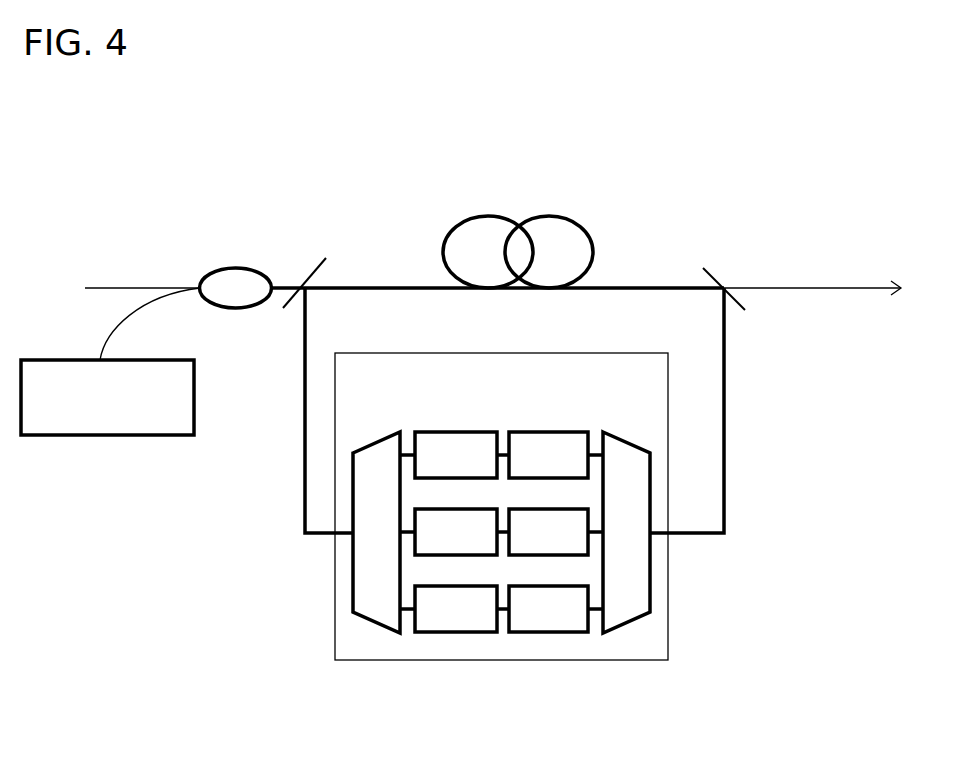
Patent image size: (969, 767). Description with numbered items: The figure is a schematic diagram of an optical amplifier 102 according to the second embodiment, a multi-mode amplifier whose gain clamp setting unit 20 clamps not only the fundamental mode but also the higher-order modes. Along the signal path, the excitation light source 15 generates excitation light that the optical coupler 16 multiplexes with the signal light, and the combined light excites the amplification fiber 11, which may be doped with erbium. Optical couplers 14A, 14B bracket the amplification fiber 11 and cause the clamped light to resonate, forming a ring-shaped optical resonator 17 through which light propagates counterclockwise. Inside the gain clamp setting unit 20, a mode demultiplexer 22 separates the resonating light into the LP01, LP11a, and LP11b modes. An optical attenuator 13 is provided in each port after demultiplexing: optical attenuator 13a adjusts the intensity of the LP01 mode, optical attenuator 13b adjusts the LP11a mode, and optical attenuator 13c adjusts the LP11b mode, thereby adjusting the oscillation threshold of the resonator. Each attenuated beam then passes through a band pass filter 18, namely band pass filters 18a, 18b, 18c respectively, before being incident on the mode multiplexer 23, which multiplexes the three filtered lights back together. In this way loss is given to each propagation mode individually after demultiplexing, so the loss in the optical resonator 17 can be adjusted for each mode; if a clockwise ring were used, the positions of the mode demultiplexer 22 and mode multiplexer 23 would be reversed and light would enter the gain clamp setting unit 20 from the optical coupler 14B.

The optical amplifier 102 is at (708, 158).
The amplification fiber 11 is at (596, 229).
The optical coupler 16 is at (233, 270).
The excitation light source 15 is at (72, 360).
The optical coupler 14A is at (312, 263).
The optical coupler 14B is at (712, 277).
The gain clamp setting unit 20 is at (513, 353).
The optical resonator 17 is at (760, 623).
The mode demultiplexer 22 is at (352, 585).
The mode multiplexer 23 is at (652, 585).
The optical attenuator 13 is at (435, 575).
The optical attenuator 13a is at (440, 431).
The optical attenuator 13b is at (440, 508).
The optical attenuator 13c is at (440, 585).
The band pass filter 18 is at (579, 575).
The band pass filter 18a is at (533, 431).
The band pass filter 18b is at (533, 508).
The band pass filter 18c is at (533, 585).